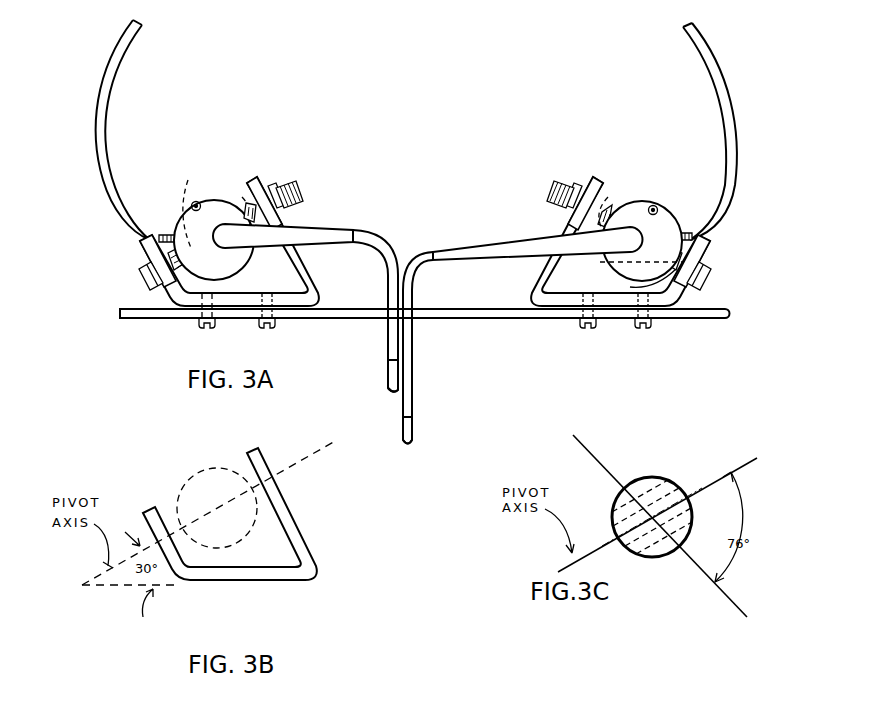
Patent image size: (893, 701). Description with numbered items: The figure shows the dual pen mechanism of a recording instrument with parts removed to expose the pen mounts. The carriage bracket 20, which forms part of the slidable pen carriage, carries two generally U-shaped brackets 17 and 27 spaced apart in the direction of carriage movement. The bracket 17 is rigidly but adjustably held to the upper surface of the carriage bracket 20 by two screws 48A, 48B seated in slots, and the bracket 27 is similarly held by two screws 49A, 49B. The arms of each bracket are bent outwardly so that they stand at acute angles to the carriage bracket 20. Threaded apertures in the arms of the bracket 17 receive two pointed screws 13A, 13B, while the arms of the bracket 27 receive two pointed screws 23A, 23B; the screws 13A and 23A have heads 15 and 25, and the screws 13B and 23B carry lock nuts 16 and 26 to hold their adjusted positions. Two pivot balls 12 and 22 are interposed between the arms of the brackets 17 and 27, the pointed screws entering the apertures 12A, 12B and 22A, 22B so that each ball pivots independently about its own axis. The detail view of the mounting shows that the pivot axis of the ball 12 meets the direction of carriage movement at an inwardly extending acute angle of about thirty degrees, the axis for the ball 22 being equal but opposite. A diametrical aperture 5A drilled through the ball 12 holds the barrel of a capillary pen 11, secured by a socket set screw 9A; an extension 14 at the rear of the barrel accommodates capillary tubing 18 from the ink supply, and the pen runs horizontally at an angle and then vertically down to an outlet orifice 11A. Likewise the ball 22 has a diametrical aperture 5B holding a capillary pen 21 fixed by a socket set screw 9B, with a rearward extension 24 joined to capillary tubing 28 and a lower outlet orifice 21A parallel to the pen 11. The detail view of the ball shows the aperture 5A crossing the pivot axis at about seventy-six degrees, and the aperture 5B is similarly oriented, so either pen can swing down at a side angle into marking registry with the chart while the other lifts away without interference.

In FIG. 3A, the diametrical aperture 5A is at (232, 250).
In FIG. 3C, the diametrical aperture 5A is at (672, 551).
In FIG. 3A, the diametrical aperture 5B is at (638, 234).
In FIG. 3A, the socket set screw 9A is at (196, 202).
In FIG. 3A, the socket set screw 9B is at (655, 206).
In FIG. 3A, the capillary pen 11 is at (275, 248).
In FIG. 3A, the outlet orifice 11A is at (390, 395).
In FIG. 3A, the pivot ball 12 is at (214, 200).
In FIG. 3B, the pivot ball 12 is at (208, 477).
In FIG. 3C, the pivot ball 12 is at (667, 474).
In FIG. 3A, the aperture 12A is at (186, 190).
In FIG. 3A, the aperture 12B is at (238, 203).
In FIG. 3A, the pointed screw 13A is at (178, 272).
In FIG. 3A, the pointed screw 13B is at (295, 186).
In FIG. 3A, the extension 14 is at (166, 234).
In FIG. 3A, the head 15 is at (140, 277).
In FIG. 3A, the lock nut 16 is at (272, 182).
In FIG. 3A, the U-shaped bracket 17 is at (310, 280).
In FIG. 3B, the U-shaped bracket 17 is at (298, 527).
In FIG. 3A, the capillary tubing 18 is at (120, 62).
In FIG. 3A, the carriage bracket 20 is at (720, 309).
In FIG. 3A, the capillary pen 21 is at (542, 243).
In FIG. 3A, the outlet orifice 21A is at (414, 418).
In FIG. 3A, the pivot ball 22 is at (668, 216).
In FIG. 3A, the aperture 22A is at (615, 207).
In FIG. 3A, the aperture 22B is at (606, 263).
In FIG. 3A, the pointed screw 23A is at (637, 285).
In FIG. 3A, the pointed screw 23B is at (607, 203).
In FIG. 3A, the rearward extension 24 is at (686, 234).
In FIG. 3A, the head 25 is at (718, 280).
In FIG. 3A, the lock nut 26 is at (588, 178).
In FIG. 3A, the U-shaped bracket 27 is at (540, 282).
In FIG. 3A, the capillary tubing 28 is at (722, 106).
In FIG. 3A, the screw 48A is at (204, 331).
In FIG. 3A, the screw 48B is at (278, 346).
In FIG. 3A, the screw 49A is at (592, 332).
In FIG. 3A, the screw 49B is at (652, 332).